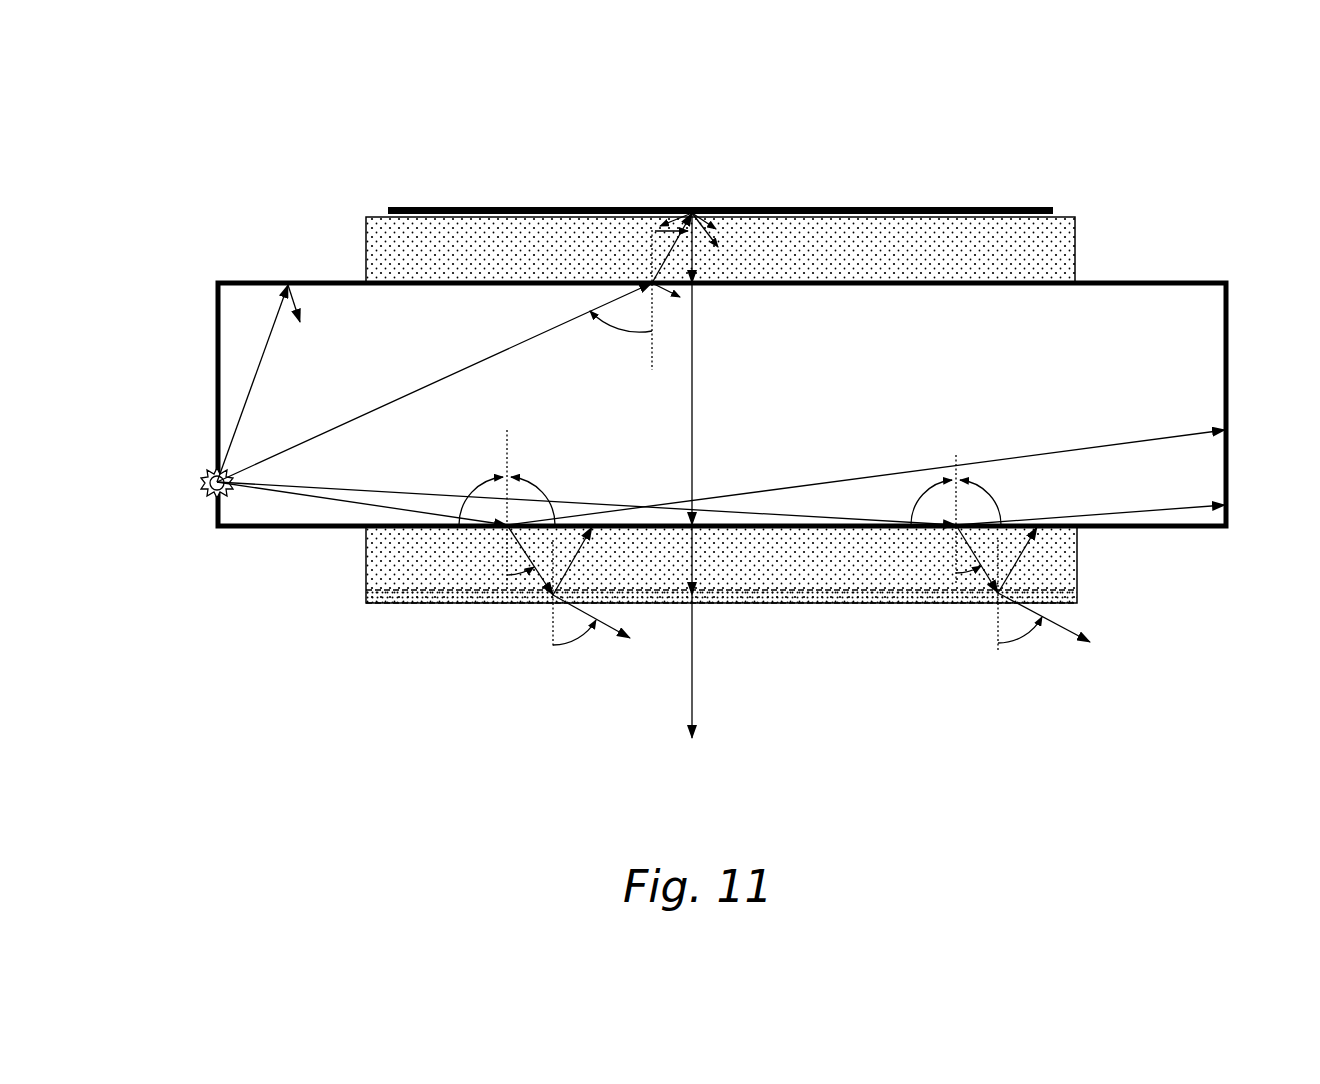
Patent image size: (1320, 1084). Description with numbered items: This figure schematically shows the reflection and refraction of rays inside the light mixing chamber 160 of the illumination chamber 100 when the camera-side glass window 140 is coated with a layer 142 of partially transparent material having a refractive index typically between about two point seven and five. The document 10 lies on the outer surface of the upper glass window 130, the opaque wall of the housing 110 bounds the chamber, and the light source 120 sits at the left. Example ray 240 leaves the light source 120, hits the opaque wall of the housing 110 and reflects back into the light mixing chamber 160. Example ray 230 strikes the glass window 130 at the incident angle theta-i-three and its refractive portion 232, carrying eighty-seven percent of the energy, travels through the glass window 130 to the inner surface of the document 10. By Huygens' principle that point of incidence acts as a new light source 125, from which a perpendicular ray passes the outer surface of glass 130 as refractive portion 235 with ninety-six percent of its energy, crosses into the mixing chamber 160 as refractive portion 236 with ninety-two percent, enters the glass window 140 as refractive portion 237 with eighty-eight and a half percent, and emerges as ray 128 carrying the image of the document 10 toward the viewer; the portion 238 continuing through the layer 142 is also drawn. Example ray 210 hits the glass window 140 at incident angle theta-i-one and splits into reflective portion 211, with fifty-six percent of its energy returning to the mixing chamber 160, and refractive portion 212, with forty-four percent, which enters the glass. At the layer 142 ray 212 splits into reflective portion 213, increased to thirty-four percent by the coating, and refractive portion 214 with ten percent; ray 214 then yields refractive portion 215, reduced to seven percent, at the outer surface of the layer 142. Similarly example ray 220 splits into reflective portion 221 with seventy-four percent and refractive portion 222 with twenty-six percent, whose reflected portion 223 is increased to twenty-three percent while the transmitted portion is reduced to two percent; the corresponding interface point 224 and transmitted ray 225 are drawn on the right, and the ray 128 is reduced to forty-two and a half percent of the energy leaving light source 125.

The illumination chamber 100 is at (318, 196).
The document 10 is at (470, 205).
The housing 110 is at (243, 283).
The light source 120 is at (210, 472).
The light source 125 is at (690, 210).
The refractive portion 128 is at (695, 698).
The glass window 130 is at (1057, 247).
The glass window 140 is at (392, 556).
The layer of partially transparent material 142 is at (392, 604).
The light mixing chamber 160 is at (1166, 325).
The example ray 210 is at (366, 503).
The reflective portion 211 is at (1080, 450).
The refractive portion 212 is at (548, 600).
The reflective portion 213 is at (578, 527).
The refractive portion 214 is at (548, 600).
The refractive portion 215 is at (618, 640).
The example ray 220 is at (425, 495).
The reflective portion 221 is at (1195, 515).
The refractive portion 222 is at (990, 535).
The reflective portion 223 is at (1035, 540).
The second reflective layer interface point 224 is at (998, 592).
The second ray transmitted through reflective layer 225 is at (1073, 632).
The example ray 230 is at (478, 367).
The refractive portion 232 is at (667, 265).
The refractive portion 235 is at (695, 268).
The refractive portion 236 is at (690, 458).
The refractive portion 237 is at (712, 578).
The ray through reflective layer 238 is at (700, 598).
The example ray 240 is at (265, 350).